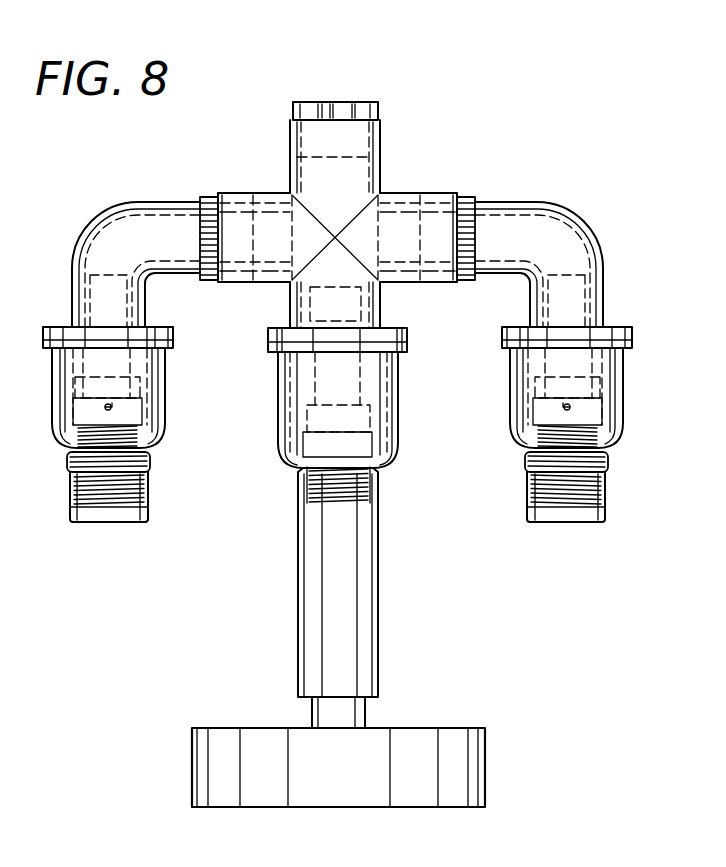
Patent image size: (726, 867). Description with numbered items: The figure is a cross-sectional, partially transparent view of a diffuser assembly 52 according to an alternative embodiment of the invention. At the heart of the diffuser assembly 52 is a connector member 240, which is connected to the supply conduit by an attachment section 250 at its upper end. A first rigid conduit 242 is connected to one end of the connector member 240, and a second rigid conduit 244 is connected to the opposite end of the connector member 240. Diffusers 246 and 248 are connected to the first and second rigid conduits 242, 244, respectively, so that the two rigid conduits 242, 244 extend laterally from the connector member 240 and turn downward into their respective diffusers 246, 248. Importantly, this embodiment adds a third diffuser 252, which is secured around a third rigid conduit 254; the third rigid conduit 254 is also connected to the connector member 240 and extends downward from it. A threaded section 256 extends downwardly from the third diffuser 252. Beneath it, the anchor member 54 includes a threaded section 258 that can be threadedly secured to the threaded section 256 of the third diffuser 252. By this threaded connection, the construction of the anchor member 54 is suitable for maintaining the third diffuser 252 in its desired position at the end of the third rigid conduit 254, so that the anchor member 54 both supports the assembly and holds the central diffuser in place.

The diffuser assembly 52 is at (402, 163).
The anchor member 54 is at (460, 727).
The connector member 240 is at (282, 191).
The first rigid conduit 242 is at (120, 203).
The second rigid conduit 244 is at (538, 203).
The diffuser 246 is at (165, 408).
The diffuser 248 is at (617, 392).
The attachment section 250 is at (380, 115).
The third diffuser 252 is at (399, 408).
The third rigid conduit 254 is at (384, 318).
The threaded section 256 is at (368, 497).
The threaded section 258 is at (374, 605).